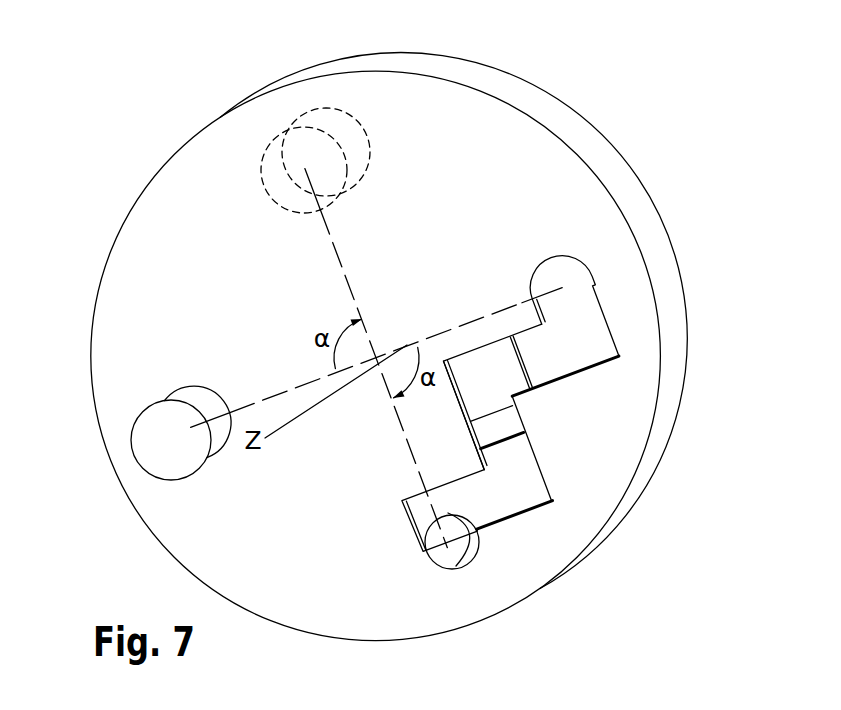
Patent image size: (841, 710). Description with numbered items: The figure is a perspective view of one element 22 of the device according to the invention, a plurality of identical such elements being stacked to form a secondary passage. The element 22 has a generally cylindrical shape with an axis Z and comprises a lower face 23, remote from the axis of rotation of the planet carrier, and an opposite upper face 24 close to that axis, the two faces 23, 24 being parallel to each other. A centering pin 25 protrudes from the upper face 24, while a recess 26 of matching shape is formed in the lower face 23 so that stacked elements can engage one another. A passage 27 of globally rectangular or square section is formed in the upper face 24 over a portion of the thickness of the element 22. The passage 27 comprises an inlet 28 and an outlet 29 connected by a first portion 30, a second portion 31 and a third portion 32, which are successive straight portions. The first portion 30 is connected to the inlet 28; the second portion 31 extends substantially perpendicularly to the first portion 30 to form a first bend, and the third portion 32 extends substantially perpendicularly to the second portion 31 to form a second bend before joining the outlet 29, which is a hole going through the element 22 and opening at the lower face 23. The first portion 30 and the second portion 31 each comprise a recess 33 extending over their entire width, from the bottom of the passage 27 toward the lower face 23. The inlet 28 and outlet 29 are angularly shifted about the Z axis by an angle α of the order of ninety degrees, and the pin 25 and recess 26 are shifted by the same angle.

The element 22 is at (90, 214).
The lower face 23 is at (640, 178).
The upper face 24 is at (512, 162).
The centering pin 25 is at (162, 452).
The recess 26 is at (276, 173).
The passage 27 is at (580, 392).
The inlet 28 is at (572, 268).
The outlet 29 is at (447, 563).
The first portion 30 is at (500, 358).
The second portion 31 is at (476, 403).
The third portion 32 is at (518, 495).
The recess 33 is at (538, 371).